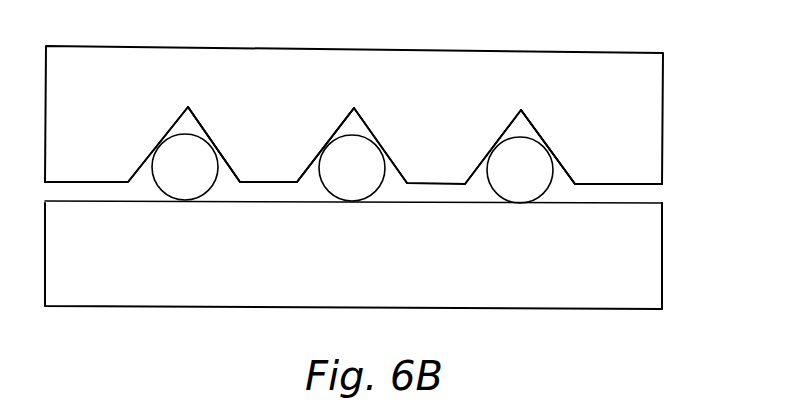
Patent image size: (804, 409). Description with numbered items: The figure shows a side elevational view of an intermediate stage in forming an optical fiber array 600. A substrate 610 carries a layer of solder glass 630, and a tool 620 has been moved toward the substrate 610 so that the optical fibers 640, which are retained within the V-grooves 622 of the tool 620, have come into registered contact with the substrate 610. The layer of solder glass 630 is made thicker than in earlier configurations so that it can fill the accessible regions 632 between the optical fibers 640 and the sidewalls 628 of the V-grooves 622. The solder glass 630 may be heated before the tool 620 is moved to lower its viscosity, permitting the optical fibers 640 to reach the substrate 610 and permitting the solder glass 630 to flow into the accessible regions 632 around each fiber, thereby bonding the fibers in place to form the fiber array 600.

The optical fiber array 600 is at (406, 227).
The substrate 610 is at (662, 253).
The tool 620 is at (662, 115).
The V-grooves 622 is at (185, 128).
The sidewalls 628 is at (141, 173).
The solder glass 630 is at (662, 197).
The accessible regions 632 is at (312, 178).
The optical fibers 640 is at (181, 182).